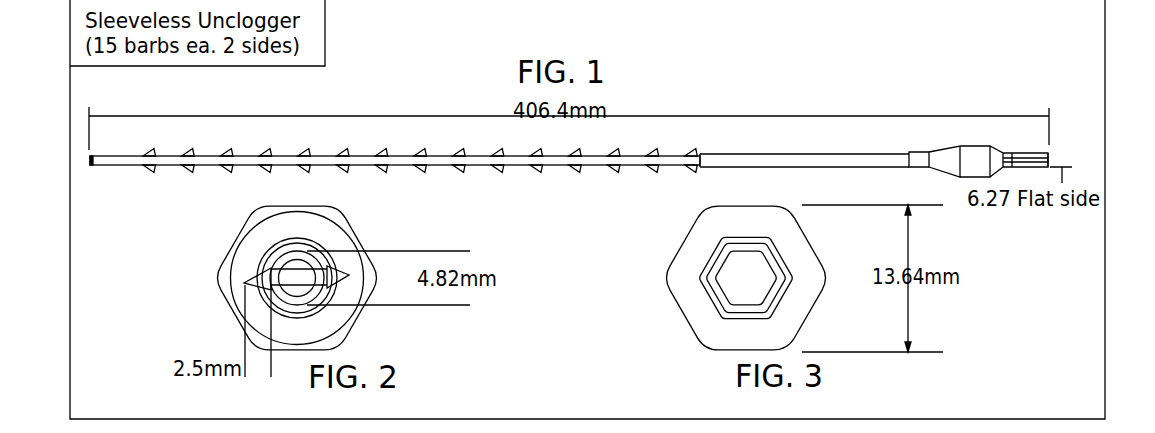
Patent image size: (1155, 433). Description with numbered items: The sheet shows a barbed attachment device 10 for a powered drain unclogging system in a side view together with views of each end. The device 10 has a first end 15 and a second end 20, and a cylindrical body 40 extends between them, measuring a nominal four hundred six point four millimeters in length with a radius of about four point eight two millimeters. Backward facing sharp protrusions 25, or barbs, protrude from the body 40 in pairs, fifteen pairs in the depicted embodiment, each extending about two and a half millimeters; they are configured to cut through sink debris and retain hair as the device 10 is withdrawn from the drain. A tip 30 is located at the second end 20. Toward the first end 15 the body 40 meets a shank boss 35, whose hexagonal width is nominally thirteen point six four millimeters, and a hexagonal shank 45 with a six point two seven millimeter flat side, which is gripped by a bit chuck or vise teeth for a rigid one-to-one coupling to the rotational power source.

In FIG. 1, the attachment device 10 is at (688, 68).
In FIG. 1, the first end 15 is at (1048, 159).
In FIG. 3, the first end 15 is at (718, 262).
In FIG. 1, the second end 20 is at (141, 158).
In FIG. 1, the protrusions 25 is at (230, 168).
In FIG. 2, the protrusions 25 is at (260, 280).
In FIG. 1, the tip 30 is at (88, 166).
In FIG. 1, the shank boss 35 is at (974, 150).
In FIG. 1, the cylindrical body 40 is at (800, 153).
In FIG. 2, the cylindrical body 40 is at (287, 247).
In FIG. 1, the hexagonal shank 45 is at (1034, 155).